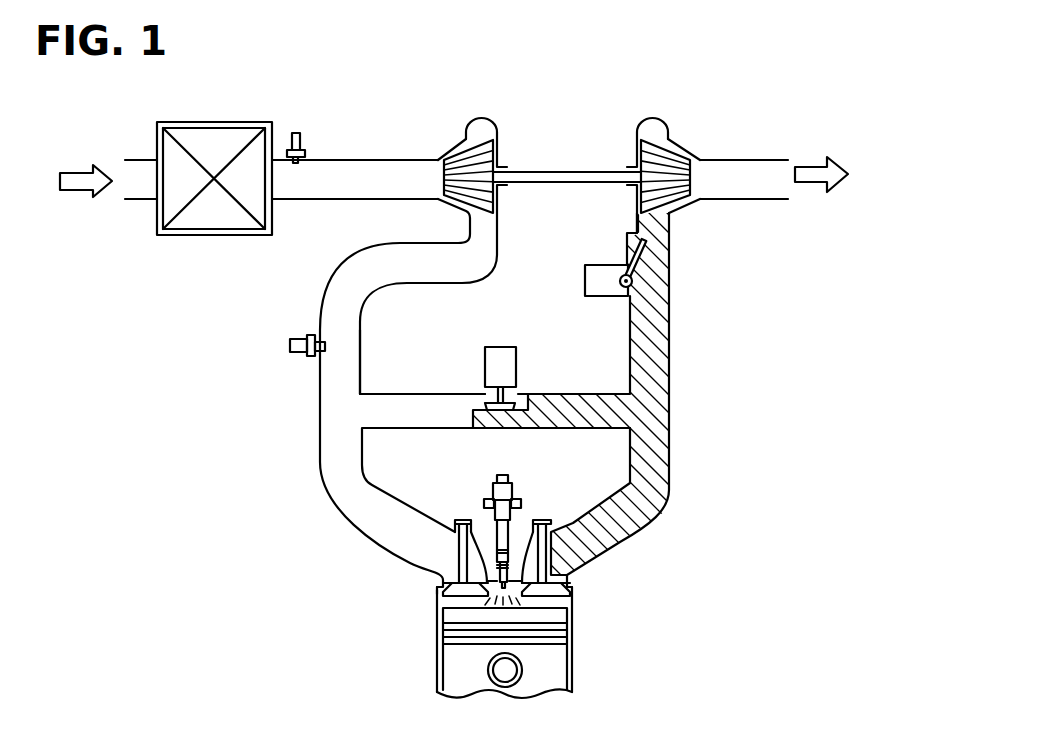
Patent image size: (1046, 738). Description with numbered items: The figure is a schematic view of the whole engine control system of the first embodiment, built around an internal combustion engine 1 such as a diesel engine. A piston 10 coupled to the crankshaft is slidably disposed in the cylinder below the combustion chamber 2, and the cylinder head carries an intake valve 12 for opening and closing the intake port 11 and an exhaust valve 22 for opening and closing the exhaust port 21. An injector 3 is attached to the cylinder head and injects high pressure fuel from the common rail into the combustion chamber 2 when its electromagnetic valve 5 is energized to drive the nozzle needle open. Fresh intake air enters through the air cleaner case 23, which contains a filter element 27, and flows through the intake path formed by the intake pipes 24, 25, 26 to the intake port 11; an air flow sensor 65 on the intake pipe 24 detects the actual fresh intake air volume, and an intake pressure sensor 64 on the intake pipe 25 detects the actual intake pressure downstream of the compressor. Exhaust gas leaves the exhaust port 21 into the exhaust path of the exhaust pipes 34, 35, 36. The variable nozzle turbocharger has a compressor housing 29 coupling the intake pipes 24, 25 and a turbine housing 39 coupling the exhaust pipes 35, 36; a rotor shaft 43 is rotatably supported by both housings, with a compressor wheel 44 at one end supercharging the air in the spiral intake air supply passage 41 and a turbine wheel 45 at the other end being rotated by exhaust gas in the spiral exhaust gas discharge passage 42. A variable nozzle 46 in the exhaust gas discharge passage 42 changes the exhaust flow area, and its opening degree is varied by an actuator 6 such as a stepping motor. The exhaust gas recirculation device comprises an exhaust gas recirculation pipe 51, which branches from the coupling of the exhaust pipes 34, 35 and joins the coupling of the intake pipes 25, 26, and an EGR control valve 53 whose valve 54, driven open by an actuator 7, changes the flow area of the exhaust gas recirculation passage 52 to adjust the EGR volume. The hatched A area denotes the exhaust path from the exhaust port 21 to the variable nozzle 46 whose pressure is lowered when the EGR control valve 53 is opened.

The internal combustion engine 1 is at (403, 680).
The combustion chamber 2 is at (565, 602).
The injector 3 is at (521, 522).
The electromagnetic valve 5 is at (511, 492).
The actuator 6 is at (597, 284).
The actuator 7 is at (488, 347).
The piston 10 is at (560, 665).
The intake port 11 is at (443, 568).
The intake valve 12 is at (441, 590).
The exhaust port 21 is at (570, 578).
The exhaust valve 22 is at (572, 592).
The air cleaner case 23 is at (250, 122).
The intake pipe 24 is at (355, 158).
The intake pipe 25 is at (326, 282).
The intake pipe 26 is at (321, 500).
The filter element 27 is at (200, 137).
The compressor housing 29 is at (483, 117).
The exhaust pipe 34 is at (669, 508).
The exhaust pipe 35 is at (671, 314).
The exhaust pipe 36 is at (749, 158).
The turbine housing 39 is at (652, 117).
The intake air supply passage 41 is at (433, 175).
The exhaust gas discharge passage 42 is at (660, 223).
The rotor shaft 43 is at (560, 171).
The compressor wheel 44 is at (498, 229).
The turbine wheel 45 is at (636, 219).
The variable nozzle 46 is at (642, 262).
The exhaust gas recirculation pipe 51 is at (392, 394).
The exhaust gas recirculation passage 52 is at (435, 403).
The EGR control valve 53 is at (514, 342).
The valve 54 is at (518, 401).
The intake pressure sensor 64 is at (290, 346).
The air flow sensor 65 is at (294, 131).
The A area A is at (650, 398).